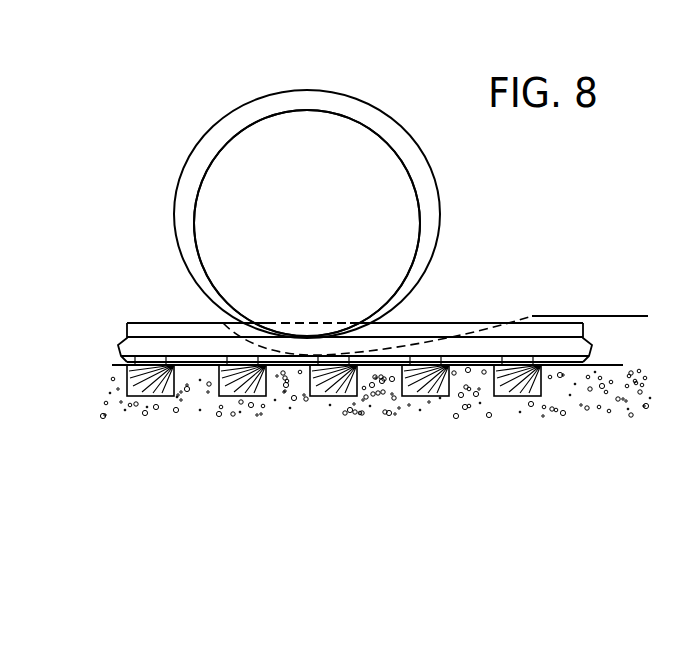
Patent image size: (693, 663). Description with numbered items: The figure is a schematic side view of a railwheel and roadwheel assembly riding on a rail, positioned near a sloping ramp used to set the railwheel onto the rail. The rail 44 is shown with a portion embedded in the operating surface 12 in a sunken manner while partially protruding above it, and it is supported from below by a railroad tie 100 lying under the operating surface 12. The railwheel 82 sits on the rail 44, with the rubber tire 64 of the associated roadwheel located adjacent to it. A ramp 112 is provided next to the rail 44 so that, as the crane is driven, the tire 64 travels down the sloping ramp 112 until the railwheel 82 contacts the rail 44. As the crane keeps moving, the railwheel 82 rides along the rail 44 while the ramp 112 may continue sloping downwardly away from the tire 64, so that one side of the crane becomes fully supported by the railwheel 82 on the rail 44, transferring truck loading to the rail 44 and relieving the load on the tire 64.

The operating surface 12 is at (612, 364).
The rail 44 is at (143, 328).
The tire 64 is at (202, 166).
The railwheel 82 is at (295, 230).
The railroad tie 100 is at (151, 378).
The ramp 112 is at (606, 333).